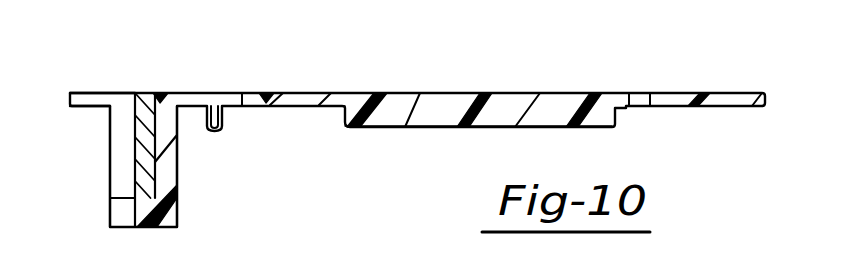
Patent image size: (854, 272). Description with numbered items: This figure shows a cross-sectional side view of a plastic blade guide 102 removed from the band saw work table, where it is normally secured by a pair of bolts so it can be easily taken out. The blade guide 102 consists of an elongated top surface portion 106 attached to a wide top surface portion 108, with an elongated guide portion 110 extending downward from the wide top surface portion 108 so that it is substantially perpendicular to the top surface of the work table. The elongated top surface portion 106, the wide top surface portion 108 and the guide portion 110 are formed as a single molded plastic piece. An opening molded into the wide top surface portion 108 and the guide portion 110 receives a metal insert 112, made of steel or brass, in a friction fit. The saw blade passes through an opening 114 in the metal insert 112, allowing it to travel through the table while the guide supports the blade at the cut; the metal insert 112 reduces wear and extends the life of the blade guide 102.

The blade guide 102 is at (469, 74).
The elongated top surface portion 106 is at (404, 106).
The wide top surface portion 108 is at (92, 99).
The elongated guide portion 110 is at (171, 166).
The metal insert 112 is at (139, 174).
The opening 114 is at (122, 147).